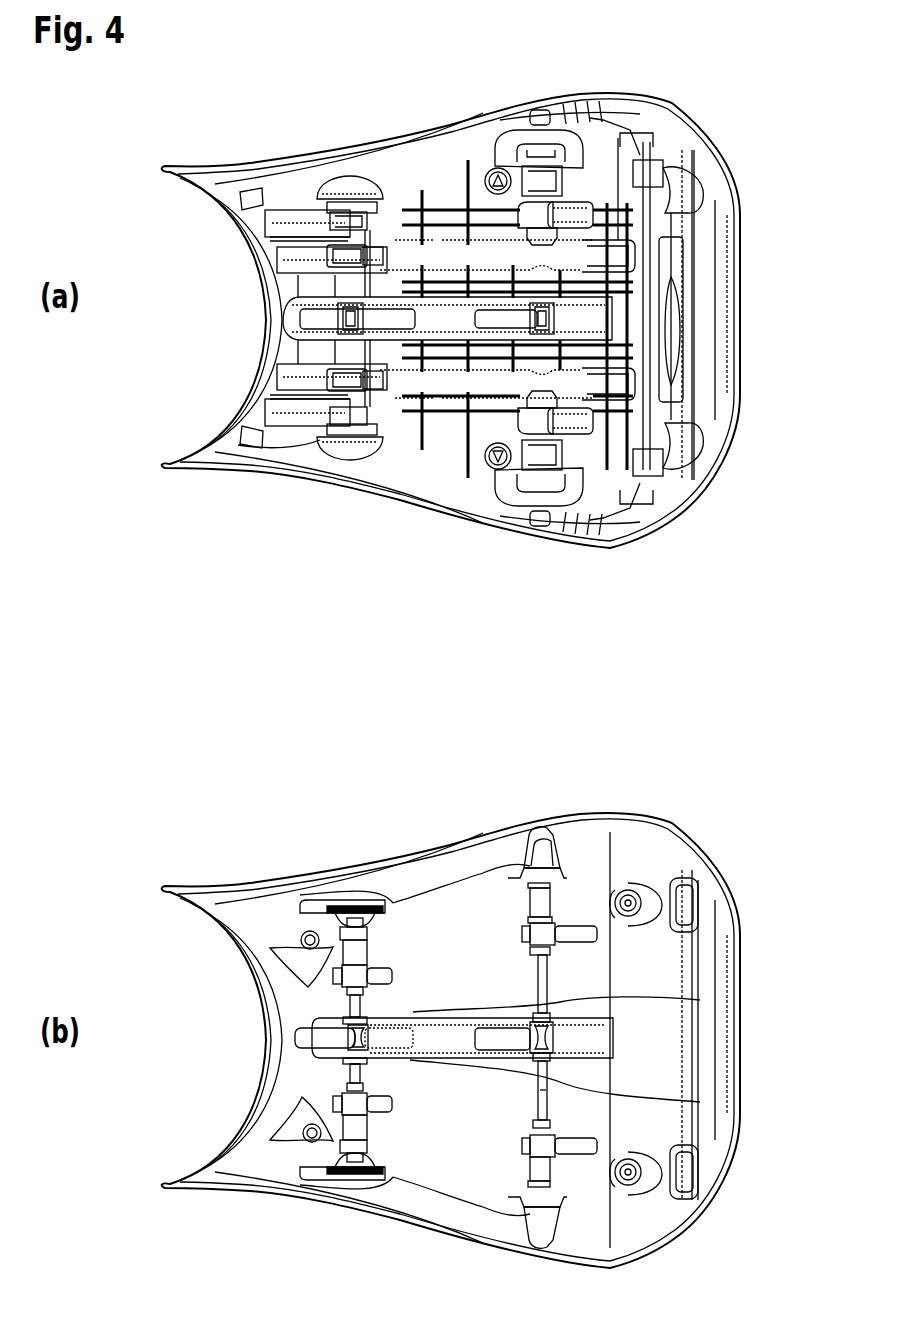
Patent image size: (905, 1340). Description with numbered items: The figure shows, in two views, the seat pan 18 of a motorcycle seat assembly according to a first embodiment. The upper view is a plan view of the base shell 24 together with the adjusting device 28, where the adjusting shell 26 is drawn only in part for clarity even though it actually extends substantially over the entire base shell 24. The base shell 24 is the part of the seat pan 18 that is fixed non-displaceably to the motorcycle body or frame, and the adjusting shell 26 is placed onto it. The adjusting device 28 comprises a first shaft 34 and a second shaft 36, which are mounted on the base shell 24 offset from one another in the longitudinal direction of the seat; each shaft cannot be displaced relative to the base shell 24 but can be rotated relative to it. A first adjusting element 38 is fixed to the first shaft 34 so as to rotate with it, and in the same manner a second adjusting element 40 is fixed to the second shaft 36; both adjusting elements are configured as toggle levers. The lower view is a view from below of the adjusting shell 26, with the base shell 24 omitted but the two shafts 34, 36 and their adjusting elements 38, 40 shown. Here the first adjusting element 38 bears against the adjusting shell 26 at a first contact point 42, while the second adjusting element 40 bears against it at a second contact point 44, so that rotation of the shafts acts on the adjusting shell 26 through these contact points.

In FIG. 4a, the seat pan 18 is at (232, 132).
In FIG. 4b, the seat pan 18 is at (232, 852).
In FIG. 4a, the base shell 24 is at (382, 172).
In FIG. 4a, the adjusting shell 26 is at (722, 258).
In FIG. 4b, the adjusting shell 26 is at (722, 994).
In FIG. 4a, the adjusting device 28 is at (320, 462).
In FIG. 4a, the first shaft 34 is at (355, 400).
In FIG. 4b, the first shaft 34 is at (345, 1069).
In FIG. 4a, the second shaft 36 is at (545, 445).
In FIG. 4b, the second shaft 36 is at (548, 1092).
In FIG. 4a, the first adjusting element 38 is at (305, 316).
In FIG. 4b, the first adjusting element 38 is at (307, 1037).
In FIG. 4a, the second adjusting element 40 is at (600, 331).
In FIG. 4b, the second adjusting element 40 is at (600, 1051).
In FIG. 4b, the first contact point 42 is at (410, 1012).
In FIG. 4b, the second contact point 44 is at (517, 1012).